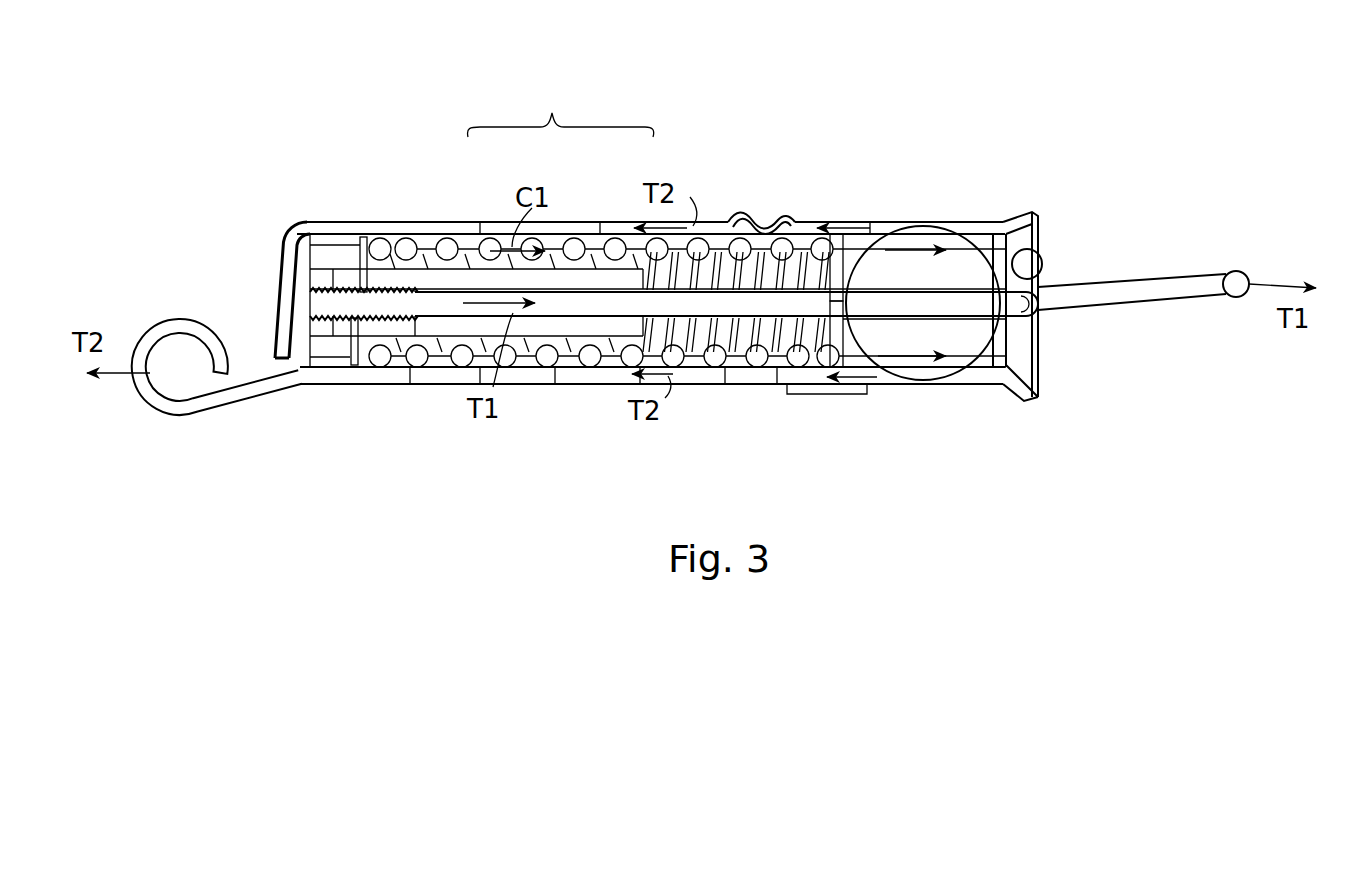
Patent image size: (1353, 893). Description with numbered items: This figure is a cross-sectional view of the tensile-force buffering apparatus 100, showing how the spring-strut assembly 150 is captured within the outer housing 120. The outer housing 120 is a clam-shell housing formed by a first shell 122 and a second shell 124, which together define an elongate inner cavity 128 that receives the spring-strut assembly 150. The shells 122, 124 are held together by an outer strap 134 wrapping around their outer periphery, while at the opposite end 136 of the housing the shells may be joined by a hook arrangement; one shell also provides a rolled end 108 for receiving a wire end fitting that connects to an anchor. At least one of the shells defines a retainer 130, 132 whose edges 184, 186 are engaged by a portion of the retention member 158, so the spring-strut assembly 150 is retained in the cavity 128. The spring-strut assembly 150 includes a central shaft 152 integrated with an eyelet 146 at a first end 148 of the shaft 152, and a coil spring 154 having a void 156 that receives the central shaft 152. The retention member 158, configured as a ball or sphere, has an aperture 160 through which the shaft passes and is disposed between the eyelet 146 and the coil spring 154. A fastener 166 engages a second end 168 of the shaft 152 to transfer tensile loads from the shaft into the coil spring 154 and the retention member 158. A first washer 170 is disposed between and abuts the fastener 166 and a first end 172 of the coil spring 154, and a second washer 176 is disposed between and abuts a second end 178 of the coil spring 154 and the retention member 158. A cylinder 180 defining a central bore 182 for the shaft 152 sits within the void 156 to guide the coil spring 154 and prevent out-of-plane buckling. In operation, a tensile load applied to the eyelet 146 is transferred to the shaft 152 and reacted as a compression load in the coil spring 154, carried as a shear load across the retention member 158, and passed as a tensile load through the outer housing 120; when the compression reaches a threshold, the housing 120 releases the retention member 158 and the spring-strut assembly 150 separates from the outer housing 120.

The tensile-force buffering apparatus 100 is at (880, 60).
The rolled end 108 is at (182, 320).
The outer housing 120 is at (561, 105).
The first shell 122 is at (462, 232).
The second shell 124 is at (613, 243).
The elongate inner cavity 128 is at (1026, 345).
The retainer 130 is at (900, 228).
The retainer 132 is at (893, 380).
The outer strap 134 is at (827, 394).
The end of the outer housing 136 is at (277, 226).
The eyelet 146 is at (1244, 272).
The first end of the shaft 148 is at (1094, 281).
The spring-strut assembly 150 is at (863, 250).
The central shaft 152 is at (705, 318).
The coil spring 154 is at (460, 358).
The void 156 is at (688, 270).
The retention member 158 is at (1042, 380).
The aperture 160 is at (903, 364).
The fastener 166 is at (325, 349).
The second end of the shaft 168 is at (380, 312).
The first washer 170 is at (362, 252).
The first end of the coil spring 172 is at (395, 248).
The second washer 176 is at (830, 271).
The second end of the coil spring 178 is at (806, 364).
The cylinder 180 is at (540, 327).
The central bore 182 is at (612, 318).
The edge of the retainer 184 is at (950, 228).
The edge of the retainer 186 is at (948, 378).